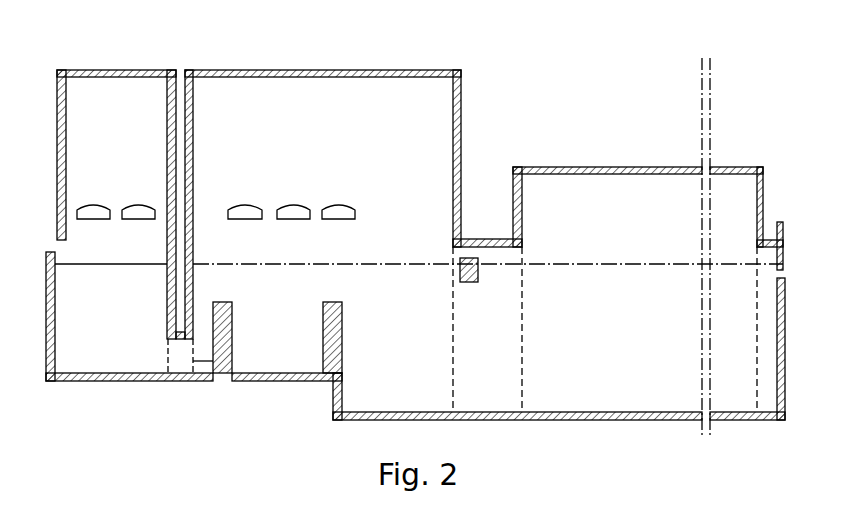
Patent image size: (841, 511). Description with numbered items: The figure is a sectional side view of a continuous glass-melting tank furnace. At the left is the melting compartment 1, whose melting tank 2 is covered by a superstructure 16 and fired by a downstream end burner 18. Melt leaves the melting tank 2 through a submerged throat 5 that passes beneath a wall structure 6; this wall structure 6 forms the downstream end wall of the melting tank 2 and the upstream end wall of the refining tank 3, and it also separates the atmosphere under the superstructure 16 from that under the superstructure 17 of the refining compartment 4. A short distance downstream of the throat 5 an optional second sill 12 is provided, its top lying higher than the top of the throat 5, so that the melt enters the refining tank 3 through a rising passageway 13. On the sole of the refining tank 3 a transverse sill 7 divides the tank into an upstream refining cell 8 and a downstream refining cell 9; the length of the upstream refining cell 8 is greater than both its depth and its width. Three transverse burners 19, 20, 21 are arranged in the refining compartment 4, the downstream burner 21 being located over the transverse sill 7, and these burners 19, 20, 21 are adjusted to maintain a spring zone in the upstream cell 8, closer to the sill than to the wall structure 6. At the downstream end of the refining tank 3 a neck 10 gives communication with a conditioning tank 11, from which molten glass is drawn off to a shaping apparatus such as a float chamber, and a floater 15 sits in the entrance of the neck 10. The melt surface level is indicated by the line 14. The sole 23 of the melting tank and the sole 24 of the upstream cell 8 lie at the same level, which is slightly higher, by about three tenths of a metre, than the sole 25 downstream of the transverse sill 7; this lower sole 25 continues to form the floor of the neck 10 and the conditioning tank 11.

The melting compartment 1 is at (116, 186).
The melting tank 2 is at (103, 326).
The refining tank 3 is at (338, 296).
The refining compartment 4 is at (353, 187).
The submerged throat 5 is at (172, 366).
The wall structure 6 is at (198, 168).
The transverse sill 7 is at (341, 302).
The upstream refining cell 8 is at (268, 326).
The downstream refining cell 9 is at (391, 326).
The neck 10 is at (476, 366).
The conditioning tank 11 is at (604, 326).
The second sill 12 is at (233, 302).
The rising passageway 13 is at (203, 352).
The melt surface level line 14 is at (575, 263).
The floater 15 is at (468, 275).
The superstructure of the melting compartment 16 is at (122, 73).
The superstructure of the refining compartment 17 is at (313, 75).
The downstream end burner 18 is at (139, 212).
The transverse burner 19 is at (245, 210).
The transverse burner 20 is at (295, 210).
The downstream transverse burner 21 is at (342, 210).
The sole of the melting tank 23 is at (87, 373).
The sole of the upstream cell 24 is at (273, 373).
The sole of the refining tank downstream of the sill 25 is at (429, 412).